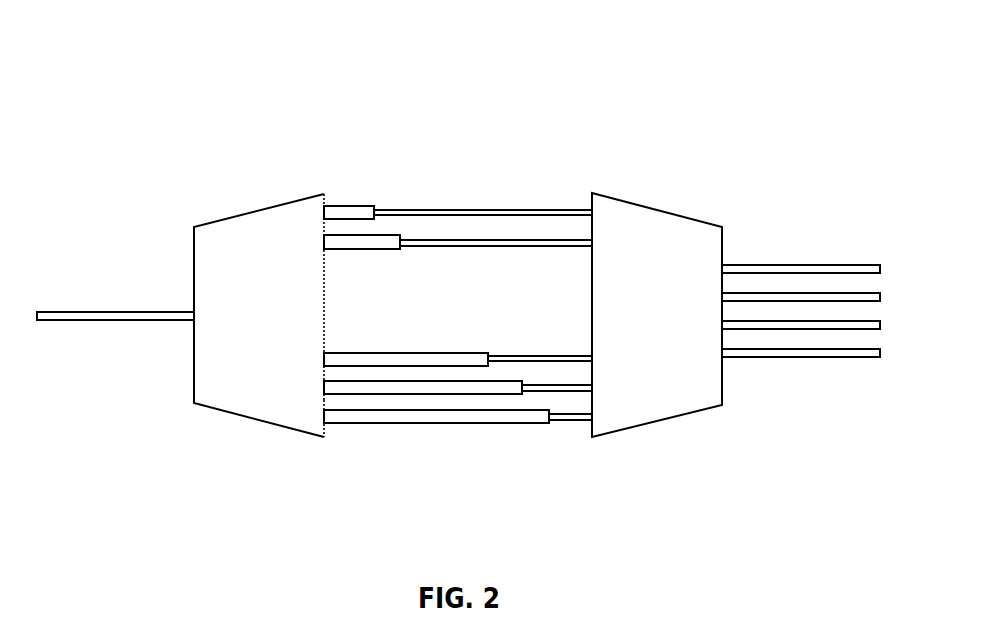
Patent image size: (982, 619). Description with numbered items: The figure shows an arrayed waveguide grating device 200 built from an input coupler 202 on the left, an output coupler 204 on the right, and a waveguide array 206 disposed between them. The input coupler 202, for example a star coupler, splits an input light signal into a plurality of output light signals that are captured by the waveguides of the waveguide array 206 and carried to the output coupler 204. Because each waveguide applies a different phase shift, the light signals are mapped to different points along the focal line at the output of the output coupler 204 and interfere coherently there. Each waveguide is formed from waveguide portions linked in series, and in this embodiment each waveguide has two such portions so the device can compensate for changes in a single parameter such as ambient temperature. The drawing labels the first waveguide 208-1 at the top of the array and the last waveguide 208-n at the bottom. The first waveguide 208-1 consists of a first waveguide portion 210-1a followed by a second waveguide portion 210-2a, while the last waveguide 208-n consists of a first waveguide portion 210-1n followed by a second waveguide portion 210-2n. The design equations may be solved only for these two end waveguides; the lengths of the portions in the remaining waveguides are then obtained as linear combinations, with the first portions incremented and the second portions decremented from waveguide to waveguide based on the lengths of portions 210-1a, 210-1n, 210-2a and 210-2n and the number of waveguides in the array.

The arrayed waveguide grating device 200 is at (592, 124).
The input coupler 202 is at (265, 410).
The output coupler 204 is at (675, 420).
The waveguide array 206 is at (451, 493).
The first waveguide 208-1 is at (324, 212).
The last waveguide 208-n is at (326, 428).
The first waveguide portion of the first waveguide 210-1a is at (355, 206).
The second waveguide portion of the first waveguide 210-2a is at (521, 209).
The first waveguide portion of the last waveguide 210-1n is at (452, 420).
The second waveguide portion of the last waveguide 210-2n is at (570, 417).